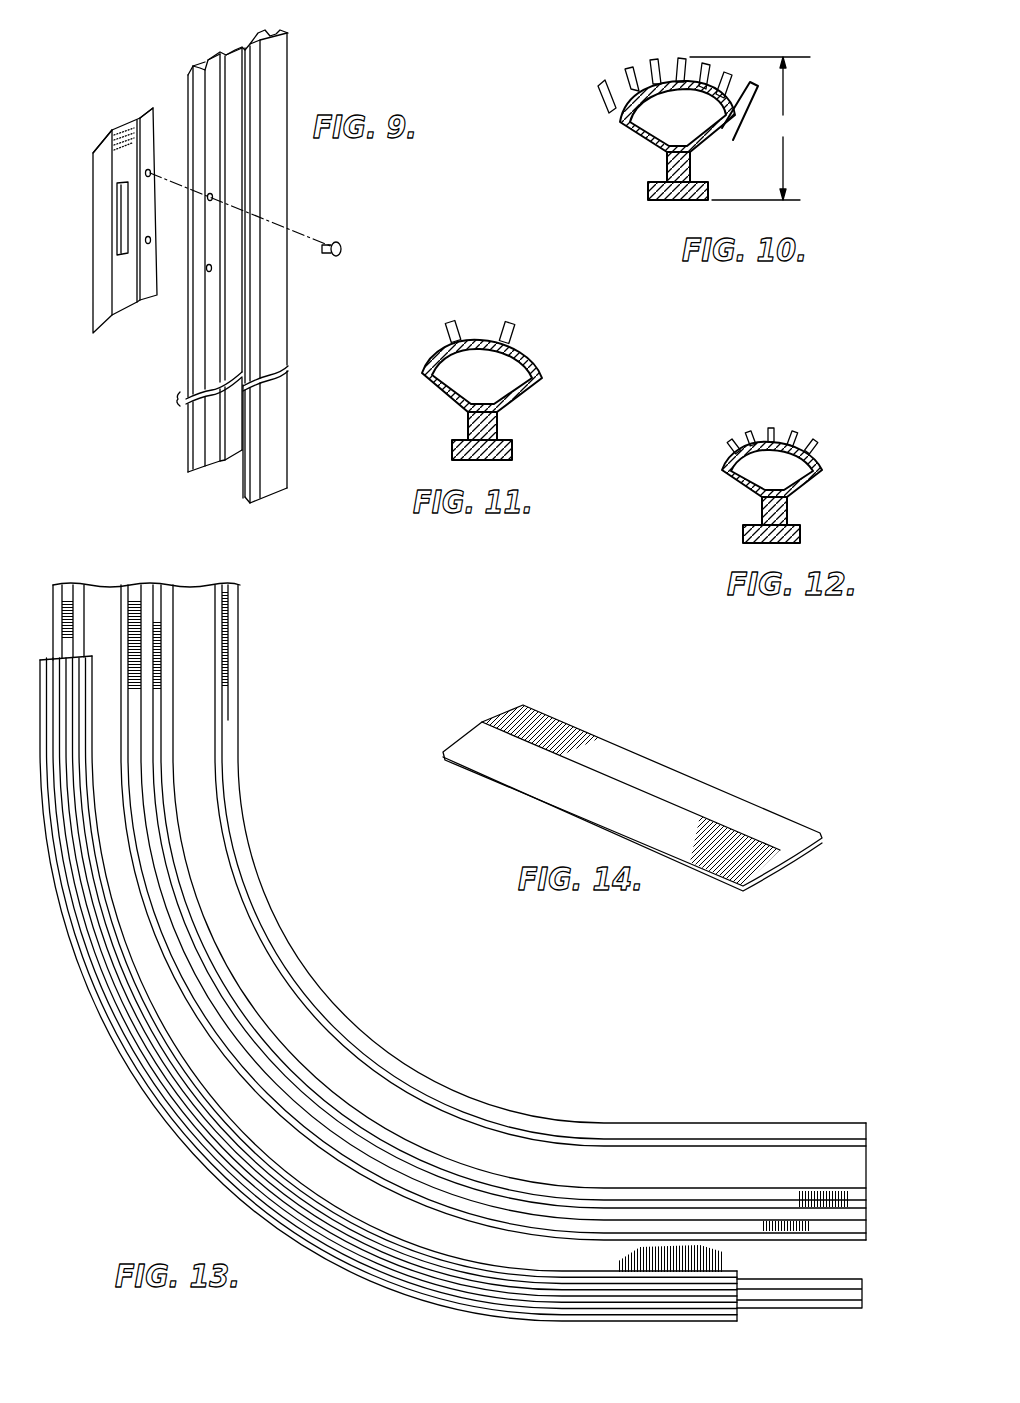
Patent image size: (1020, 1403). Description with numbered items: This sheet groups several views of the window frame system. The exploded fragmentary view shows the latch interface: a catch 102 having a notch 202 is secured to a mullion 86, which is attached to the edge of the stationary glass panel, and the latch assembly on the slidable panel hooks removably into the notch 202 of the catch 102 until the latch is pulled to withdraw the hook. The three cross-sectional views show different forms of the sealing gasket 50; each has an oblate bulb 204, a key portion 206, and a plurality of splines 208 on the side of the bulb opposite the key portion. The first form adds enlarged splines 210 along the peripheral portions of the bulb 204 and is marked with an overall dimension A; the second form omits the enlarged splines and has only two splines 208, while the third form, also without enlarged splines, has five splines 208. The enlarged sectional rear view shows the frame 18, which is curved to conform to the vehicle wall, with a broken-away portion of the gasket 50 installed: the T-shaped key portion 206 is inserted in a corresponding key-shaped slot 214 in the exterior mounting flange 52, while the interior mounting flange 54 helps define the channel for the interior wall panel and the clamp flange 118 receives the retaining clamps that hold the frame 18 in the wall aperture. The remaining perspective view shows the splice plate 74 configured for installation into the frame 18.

In FIG. 13, the frame 18 is at (453, 944).
In FIG. 10, the weatherstrip 50 is at (657, 110).
In FIG. 13, the weatherstrip 50 is at (388, 988).
In FIG. 13, the exterior mounting flange 52 is at (58, 584).
In FIG. 13, the interior mounting flange 54 is at (200, 640).
In FIG. 14, the cover plate 74 is at (672, 775).
In FIG. 9, the mullion 86 is at (280, 311).
In FIG. 9, the catch 102 is at (118, 120).
In FIG. 13, the clamp flange 118 is at (137, 587).
In FIG. 9, the notch 202 is at (118, 246).
In FIG. 10, the oblate bulb 204 is at (620, 124).
In FIG. 11, the oblate bulb 204 is at (525, 392).
In FIG. 12, the oblate bulb 204 is at (822, 470).
In FIG. 10, the key portion 206 is at (648, 198).
In FIG. 11, the key portion 206 is at (452, 450).
In FIG. 12, the key portion 206 is at (800, 538).
In FIG. 10, the splines 208 is at (684, 58).
In FIG. 11, the splines 208 is at (506, 322).
In FIG. 12, the splines 208 is at (796, 430).
In FIG. 13, the splines 208 is at (216, 1158).
In FIG. 10, the enlarged splines 210 is at (601, 90).
In FIG. 13, the enlarged splines 210 is at (172, 1123).
In FIG. 13, the key-shaped slot 214 is at (785, 1298).
In FIG. 10, the height dimension A is at (750, 128).